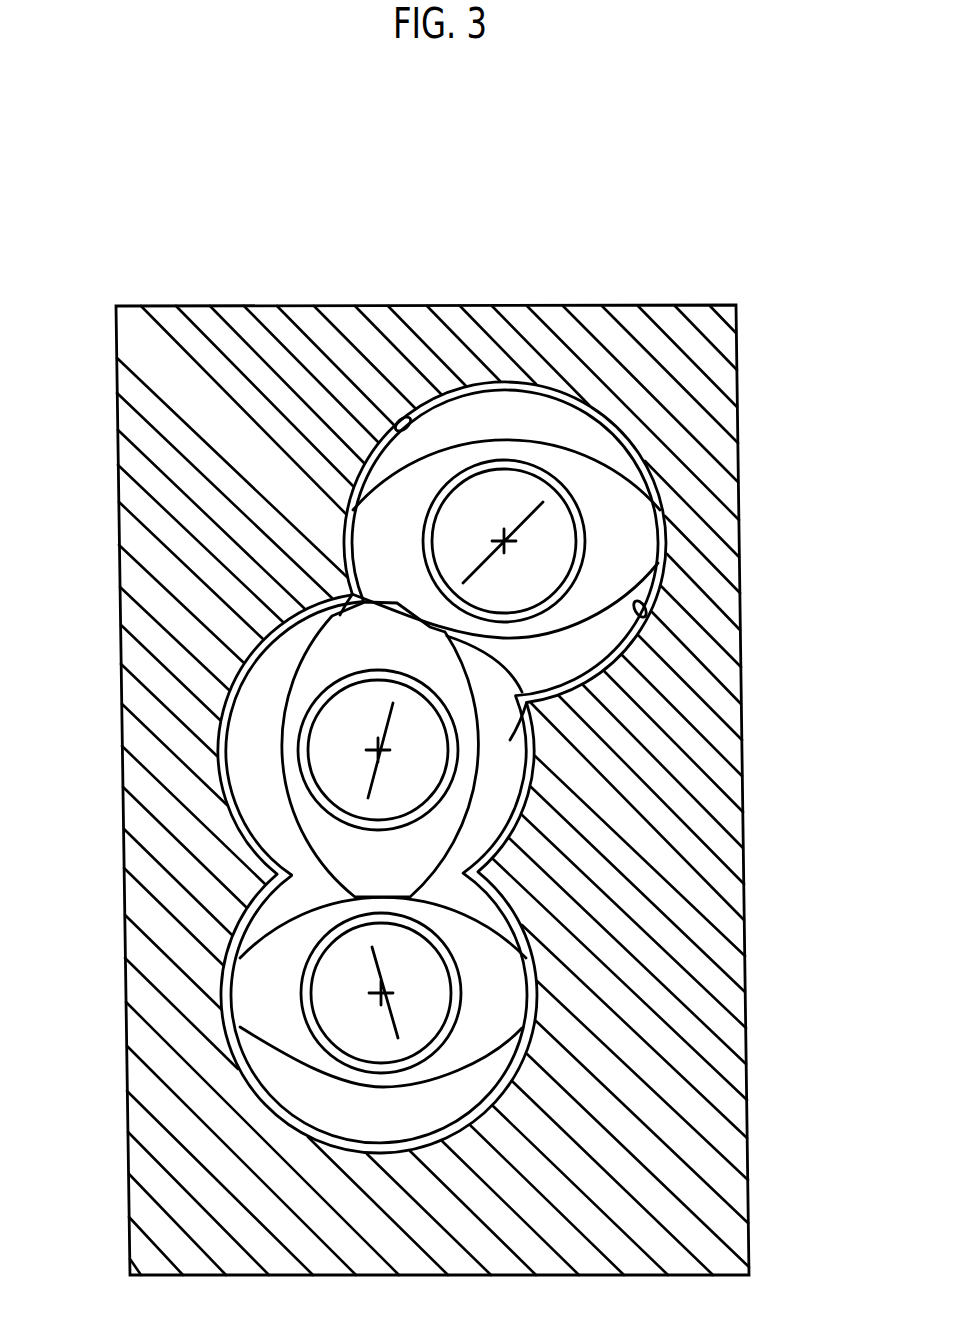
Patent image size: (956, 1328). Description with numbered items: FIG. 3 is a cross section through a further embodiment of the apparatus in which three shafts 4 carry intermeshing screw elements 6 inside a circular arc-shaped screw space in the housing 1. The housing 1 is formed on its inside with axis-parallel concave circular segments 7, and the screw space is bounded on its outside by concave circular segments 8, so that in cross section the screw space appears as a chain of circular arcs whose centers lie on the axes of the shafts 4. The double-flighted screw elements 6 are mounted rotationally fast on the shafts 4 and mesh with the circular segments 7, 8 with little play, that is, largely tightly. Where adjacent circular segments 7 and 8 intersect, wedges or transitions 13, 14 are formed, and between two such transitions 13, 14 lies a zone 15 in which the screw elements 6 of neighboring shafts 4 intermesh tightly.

The housing 1 is at (706, 392).
The shaft 4 is at (435, 1013).
The screw element 6 is at (487, 1074).
The concave circular segment 7 is at (408, 415).
The concave circular segment 8 is at (643, 600).
The wedge 13 is at (328, 588).
The wedge 14 is at (550, 702).
The intermeshing zone 15 is at (448, 642).